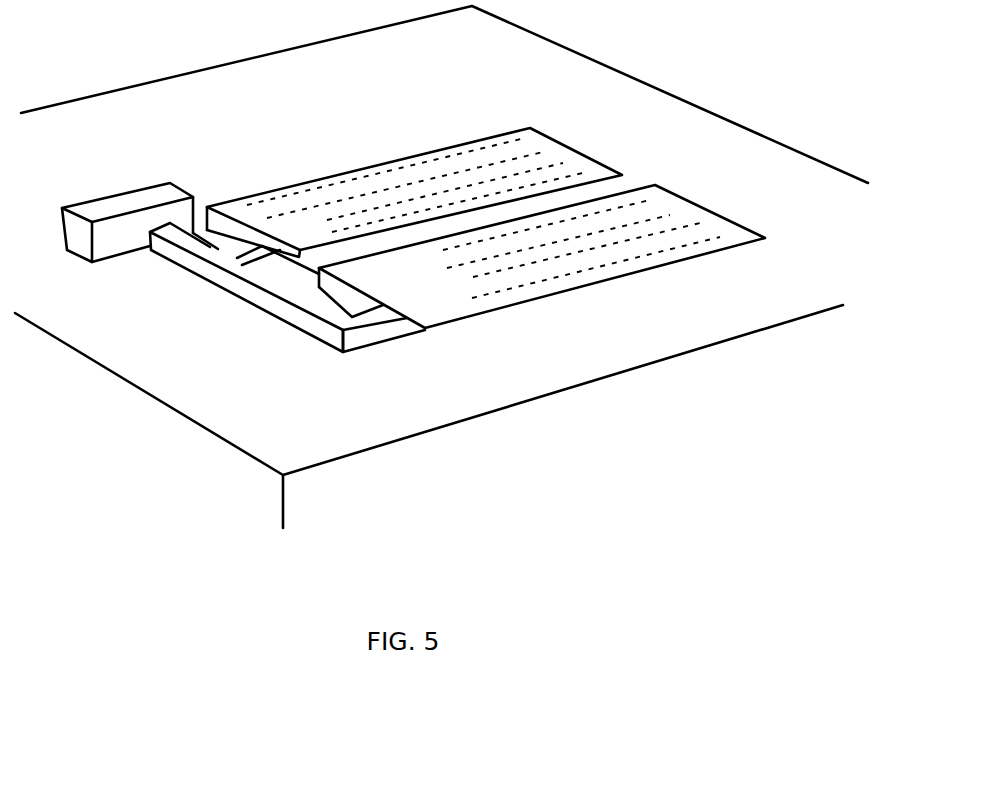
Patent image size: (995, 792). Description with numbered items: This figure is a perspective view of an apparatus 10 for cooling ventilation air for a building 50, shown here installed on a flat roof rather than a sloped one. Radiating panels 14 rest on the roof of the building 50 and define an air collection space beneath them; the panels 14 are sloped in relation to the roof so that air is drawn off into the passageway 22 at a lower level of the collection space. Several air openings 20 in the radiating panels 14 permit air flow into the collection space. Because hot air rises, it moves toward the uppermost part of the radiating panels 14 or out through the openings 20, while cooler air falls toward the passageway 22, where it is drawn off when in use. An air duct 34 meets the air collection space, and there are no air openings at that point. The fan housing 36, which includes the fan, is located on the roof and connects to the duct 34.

The antenna device 10 is at (532, 91).
The radiating panels 14 is at (537, 142).
The air openings 20 is at (506, 270).
The passageway 22 is at (342, 331).
The air duct 34 is at (252, 280).
The fan housing 36 is at (133, 245).
The building 50 is at (331, 512).